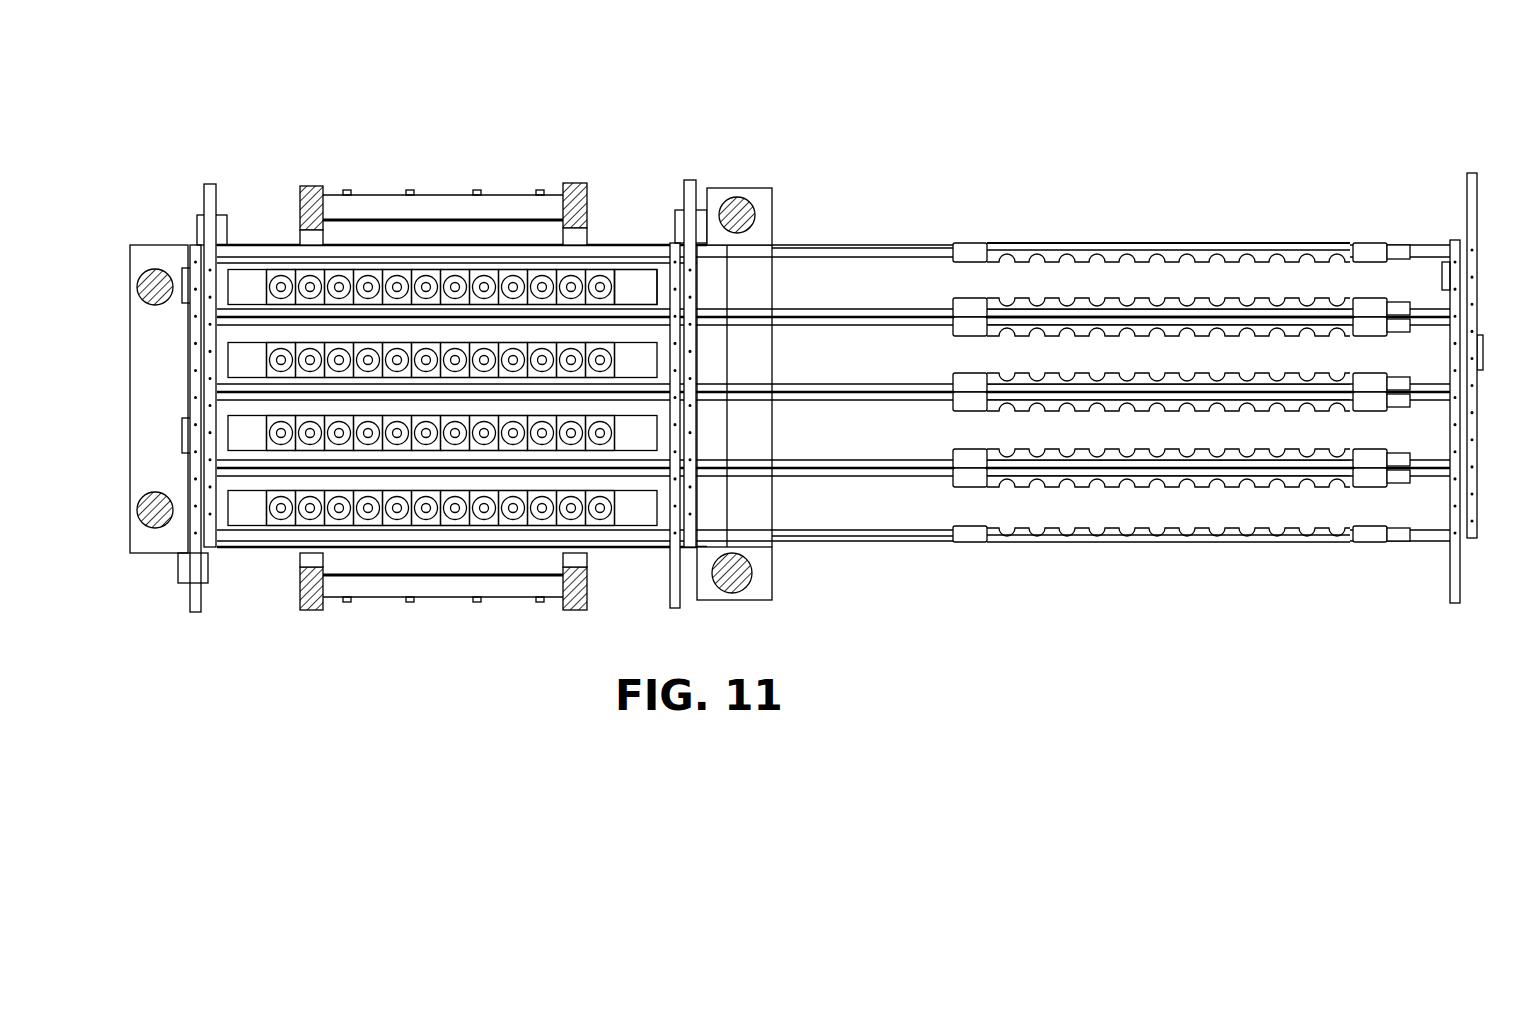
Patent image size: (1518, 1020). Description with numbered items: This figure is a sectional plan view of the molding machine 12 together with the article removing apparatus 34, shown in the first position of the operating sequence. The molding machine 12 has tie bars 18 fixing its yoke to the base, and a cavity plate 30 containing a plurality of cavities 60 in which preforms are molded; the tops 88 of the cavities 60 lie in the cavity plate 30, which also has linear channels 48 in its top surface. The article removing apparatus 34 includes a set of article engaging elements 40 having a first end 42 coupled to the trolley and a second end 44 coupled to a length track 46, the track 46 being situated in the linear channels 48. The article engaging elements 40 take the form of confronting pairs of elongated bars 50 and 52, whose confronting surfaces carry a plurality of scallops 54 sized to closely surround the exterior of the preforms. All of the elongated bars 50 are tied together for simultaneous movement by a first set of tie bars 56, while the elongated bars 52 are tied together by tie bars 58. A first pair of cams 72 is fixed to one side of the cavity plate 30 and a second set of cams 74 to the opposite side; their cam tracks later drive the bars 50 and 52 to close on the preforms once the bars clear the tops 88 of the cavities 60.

The molding machine 12 is at (542, 115).
The tie bars 18 is at (757, 562).
The cavity plate 30 is at (255, 282).
The article removing apparatus 34 is at (1103, 223).
The article engaging elements 40 is at (1105, 262).
The first end 42 is at (1362, 542).
The second end 44 is at (965, 540).
The track 46 is at (820, 385).
The linear channels 48 is at (445, 484).
The elongated bars 50 is at (1290, 298).
The elongated bars 52 is at (1236, 247).
The scallops 54 is at (1128, 336).
The tie bars 56 is at (195, 602).
The tie bars 58 is at (210, 184).
The cavities 60 is at (450, 270).
The first pair of cams 72 is at (300, 588).
The second set of cams 74 is at (312, 188).
The tops 88 is at (603, 282).